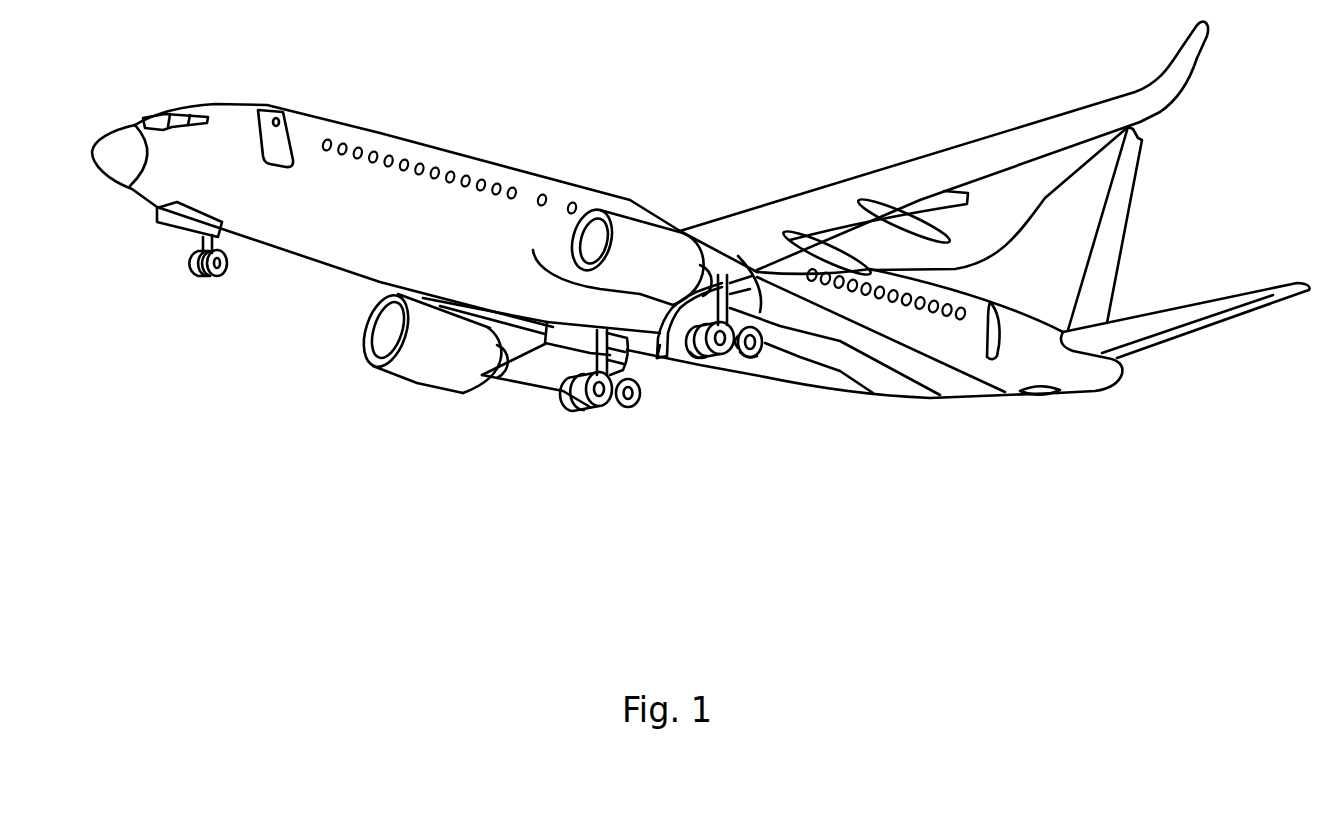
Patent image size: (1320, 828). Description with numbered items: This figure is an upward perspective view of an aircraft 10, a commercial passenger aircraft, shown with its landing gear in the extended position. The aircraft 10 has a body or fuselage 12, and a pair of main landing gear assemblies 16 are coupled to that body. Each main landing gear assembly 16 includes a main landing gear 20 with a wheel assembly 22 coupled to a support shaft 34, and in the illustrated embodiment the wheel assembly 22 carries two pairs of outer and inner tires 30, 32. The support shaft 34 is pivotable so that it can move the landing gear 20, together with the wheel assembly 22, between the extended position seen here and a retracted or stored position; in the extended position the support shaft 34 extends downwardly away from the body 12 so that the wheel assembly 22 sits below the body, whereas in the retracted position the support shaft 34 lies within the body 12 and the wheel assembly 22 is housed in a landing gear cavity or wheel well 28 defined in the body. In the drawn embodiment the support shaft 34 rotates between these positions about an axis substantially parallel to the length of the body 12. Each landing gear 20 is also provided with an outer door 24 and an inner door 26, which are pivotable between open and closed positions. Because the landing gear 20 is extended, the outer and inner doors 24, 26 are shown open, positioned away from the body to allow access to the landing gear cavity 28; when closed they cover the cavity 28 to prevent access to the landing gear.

The aircraft 10 is at (1208, 139).
The body or fuselage 12 is at (533, 293).
The main landing gear assembly 16 is at (552, 421).
The main landing gear 20 is at (590, 430).
The wheel assembly 22 is at (718, 378).
The outer door 24 is at (1000, 398).
The inner door 26 is at (665, 348).
The landing gear cavity or wheel well 28 is at (937, 398).
The outer tire 30 is at (752, 378).
The inner tire 32 is at (694, 368).
The support shaft 34 is at (870, 396).